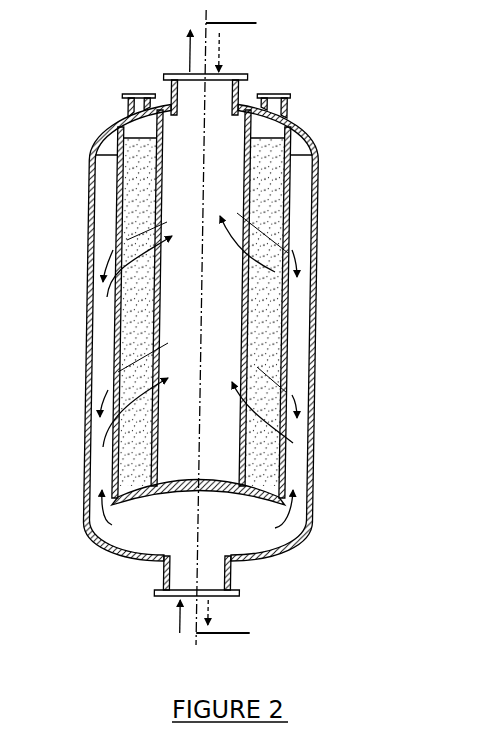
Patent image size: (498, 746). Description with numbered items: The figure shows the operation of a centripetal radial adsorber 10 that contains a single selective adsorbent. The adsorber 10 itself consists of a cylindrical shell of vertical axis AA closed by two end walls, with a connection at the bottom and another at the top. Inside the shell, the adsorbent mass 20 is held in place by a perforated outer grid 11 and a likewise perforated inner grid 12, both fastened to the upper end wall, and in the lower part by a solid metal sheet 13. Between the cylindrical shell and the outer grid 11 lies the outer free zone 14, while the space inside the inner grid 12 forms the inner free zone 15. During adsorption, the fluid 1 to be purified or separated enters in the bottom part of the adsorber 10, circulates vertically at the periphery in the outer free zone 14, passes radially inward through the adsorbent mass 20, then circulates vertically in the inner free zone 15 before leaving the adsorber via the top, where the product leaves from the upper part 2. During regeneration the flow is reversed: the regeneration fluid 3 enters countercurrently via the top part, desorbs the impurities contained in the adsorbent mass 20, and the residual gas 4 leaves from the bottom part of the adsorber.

The fluid to be purified 1 is at (173, 616).
The product outlet at upper part 2 is at (183, 51).
The regeneration fluid 3 is at (225, 52).
The residual gas 4 is at (215, 612).
The radial adsorber 10 is at (312, 197).
The perforated outer grid 11 is at (288, 370).
The perforated inner grid 12 is at (250, 343).
The solid metal sheet 13 is at (262, 480).
The outer free zone 14 is at (297, 312).
The inner free zone 15 is at (240, 318).
The adsorbent mass 20 is at (265, 185).